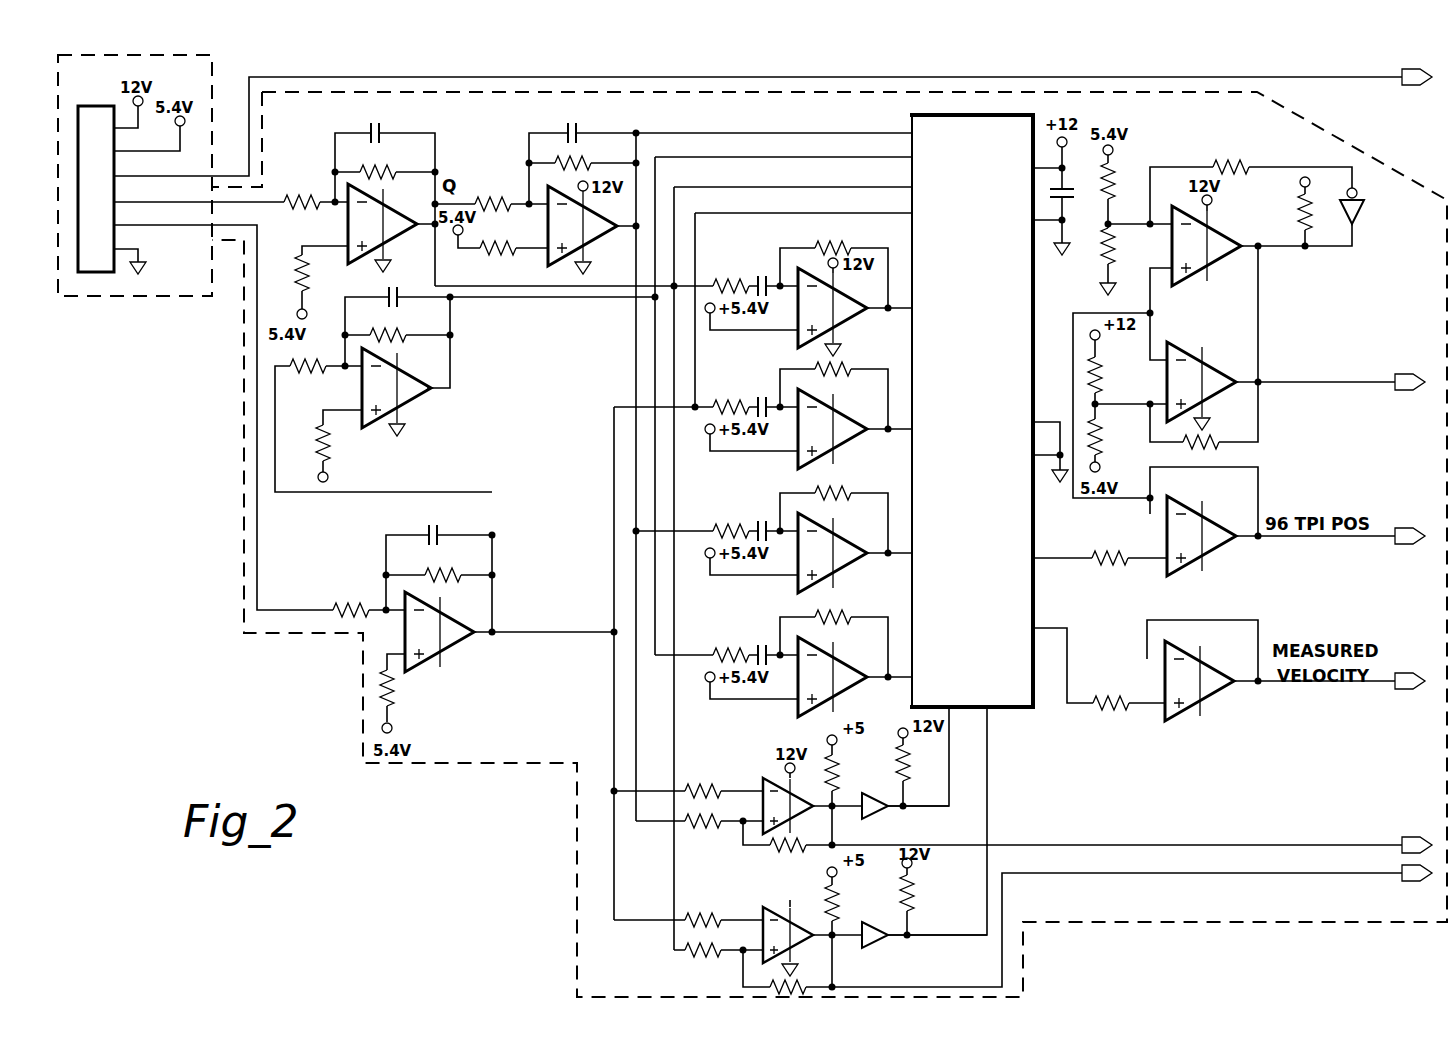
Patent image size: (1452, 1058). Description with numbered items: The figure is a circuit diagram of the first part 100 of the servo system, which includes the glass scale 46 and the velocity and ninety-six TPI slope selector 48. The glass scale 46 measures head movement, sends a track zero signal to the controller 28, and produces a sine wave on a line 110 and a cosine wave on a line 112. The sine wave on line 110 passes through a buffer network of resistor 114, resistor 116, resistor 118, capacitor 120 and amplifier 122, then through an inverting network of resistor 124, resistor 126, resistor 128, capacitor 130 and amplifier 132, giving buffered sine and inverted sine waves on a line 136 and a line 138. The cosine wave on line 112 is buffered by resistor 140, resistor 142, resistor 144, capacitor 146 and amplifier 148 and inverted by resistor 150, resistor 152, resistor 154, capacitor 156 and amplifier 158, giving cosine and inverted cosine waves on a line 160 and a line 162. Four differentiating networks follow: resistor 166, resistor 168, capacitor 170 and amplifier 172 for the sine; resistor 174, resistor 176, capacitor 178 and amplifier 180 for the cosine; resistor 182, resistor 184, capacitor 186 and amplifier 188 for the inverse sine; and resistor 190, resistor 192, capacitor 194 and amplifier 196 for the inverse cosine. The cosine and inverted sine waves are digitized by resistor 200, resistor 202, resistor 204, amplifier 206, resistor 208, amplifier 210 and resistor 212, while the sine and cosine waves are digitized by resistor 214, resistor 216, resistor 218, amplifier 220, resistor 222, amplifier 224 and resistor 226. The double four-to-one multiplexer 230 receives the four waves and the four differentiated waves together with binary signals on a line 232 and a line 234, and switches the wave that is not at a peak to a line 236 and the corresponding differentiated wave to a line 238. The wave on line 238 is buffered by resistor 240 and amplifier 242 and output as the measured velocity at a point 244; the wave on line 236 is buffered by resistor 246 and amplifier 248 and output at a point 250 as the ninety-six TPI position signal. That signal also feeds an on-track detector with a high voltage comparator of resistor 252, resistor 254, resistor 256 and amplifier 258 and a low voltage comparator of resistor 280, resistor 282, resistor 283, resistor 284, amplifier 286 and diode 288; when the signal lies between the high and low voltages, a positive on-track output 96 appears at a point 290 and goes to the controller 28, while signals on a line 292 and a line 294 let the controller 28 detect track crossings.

The controller 28 is at (773, 116).
The glass scale 46 is at (154, 296).
The velocity and ninety-six TPI slope selector 48 is at (242, 456).
The on track signal 96 is at (1330, 371).
The first part of the system 100 is at (201, 572).
The line 110 is at (268, 202).
The line 112 is at (146, 225).
The resistor 114 is at (310, 204).
The resistor 116 is at (386, 172).
The resistor 118 is at (310, 273).
The capacitor 120 is at (377, 131).
The amplifier 122 is at (392, 236).
The resistor 124 is at (498, 202).
The resistor 126 is at (514, 240).
The resistor 128 is at (588, 162).
The capacitor 130 is at (577, 124).
The amplifier 132 is at (592, 238).
The line 136 is at (776, 182).
The line 138 is at (636, 328).
The resistor 140 is at (357, 602).
The resistor 142 is at (450, 570).
The resistor 144 is at (400, 696).
The capacitor 146 is at (435, 527).
The amplifier 148 is at (449, 644).
The resistor 150 is at (313, 370).
The resistor 152 is at (402, 332).
The resistor 154 is at (336, 448).
The capacitor 156 is at (394, 290).
The amplifier 158 is at (406, 400).
The line 160 is at (796, 208).
The line 162 is at (655, 372).
The resistor 166 is at (720, 282).
The resistor 168 is at (841, 244).
The capacitor 170 is at (758, 280).
The amplifier 172 is at (842, 320).
The resistor 174 is at (721, 404).
The resistor 176 is at (848, 370).
The capacitor 178 is at (758, 400).
The amplifier 180 is at (842, 441).
The resistor 182 is at (711, 528).
The resistor 184 is at (851, 491).
The capacitor 186 is at (758, 522).
The amplifier 188 is at (842, 565).
The resistor 190 is at (717, 652).
The resistor 192 is at (851, 616).
The capacitor 194 is at (758, 644).
The amplifier 196 is at (842, 689).
The resistor 200 is at (704, 788).
The resistor 202 is at (712, 834).
The resistor 204 is at (788, 850).
The amplifier 206 is at (754, 785).
The resistor 208 is at (842, 780).
The amplifier 210 is at (868, 818).
The resistor 212 is at (916, 767).
The resistor 214 is at (704, 910).
The resistor 216 is at (708, 960).
The resistor 218 is at (820, 985).
The amplifier 220 is at (754, 910).
The resistor 222 is at (846, 908).
The amplifier 224 is at (886, 940).
The resistor 226 is at (920, 896).
The double four-to-one multiplexer 230 is at (972, 411).
The line 232 is at (956, 804).
The line 234 is at (987, 778).
The line 236 is at (1050, 544).
The line 238 is at (1067, 658).
The resistor 240 is at (1128, 694).
The amplifier 242 is at (1209, 693).
The point 244 is at (1404, 692).
The resistor 246 is at (1122, 554).
The amplifier 248 is at (1211, 548).
The point 250 is at (1405, 544).
The resistor 252 is at (1110, 378).
The resistor 254 is at (1110, 446).
The resistor 256 is at (1219, 440).
The amplifier 258 is at (1211, 394).
The resistor 280 is at (1118, 178).
The resistor 282 is at (1115, 262).
The resistor 283 is at (1248, 153).
The resistor 284 is at (1302, 208).
The amplifier 286 is at (1216, 258).
The diode 288 is at (1366, 210).
The point 290 is at (1404, 392).
The line 292 is at (1325, 829).
The line 294 is at (1405, 887).